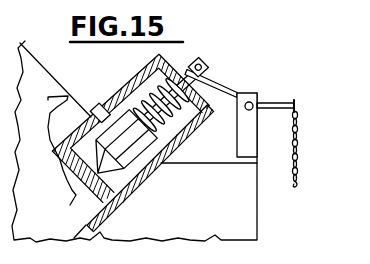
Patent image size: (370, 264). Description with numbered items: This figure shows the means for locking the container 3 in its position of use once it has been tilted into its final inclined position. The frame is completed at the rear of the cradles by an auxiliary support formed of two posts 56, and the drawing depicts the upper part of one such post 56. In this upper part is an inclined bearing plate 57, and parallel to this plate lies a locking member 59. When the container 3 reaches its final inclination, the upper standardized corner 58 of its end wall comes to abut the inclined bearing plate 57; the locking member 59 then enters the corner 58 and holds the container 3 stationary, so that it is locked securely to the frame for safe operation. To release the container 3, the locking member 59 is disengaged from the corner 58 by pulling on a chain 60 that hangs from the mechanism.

The container 3 is at (42, 64).
The post 56 is at (134, 141).
The inclined bearing plate 57 is at (142, 183).
The upper standardized corner 58 is at (84, 203).
The locking member 59 is at (118, 110).
The chain 60 is at (298, 172).